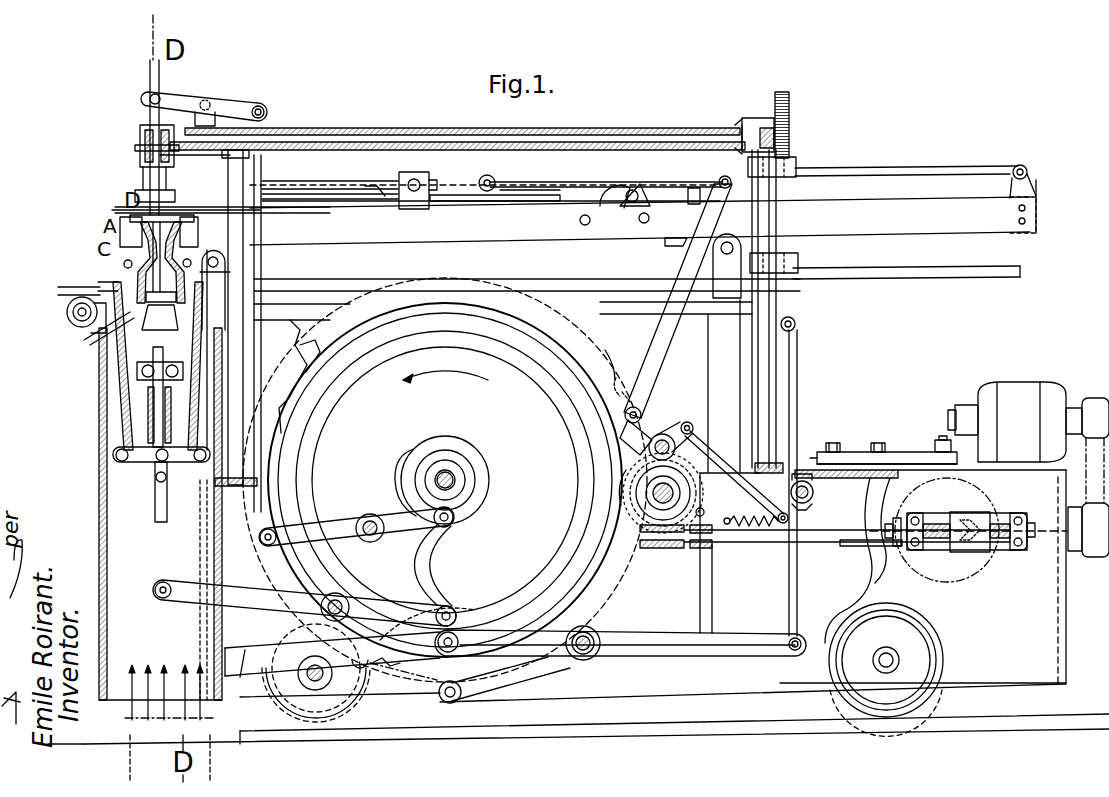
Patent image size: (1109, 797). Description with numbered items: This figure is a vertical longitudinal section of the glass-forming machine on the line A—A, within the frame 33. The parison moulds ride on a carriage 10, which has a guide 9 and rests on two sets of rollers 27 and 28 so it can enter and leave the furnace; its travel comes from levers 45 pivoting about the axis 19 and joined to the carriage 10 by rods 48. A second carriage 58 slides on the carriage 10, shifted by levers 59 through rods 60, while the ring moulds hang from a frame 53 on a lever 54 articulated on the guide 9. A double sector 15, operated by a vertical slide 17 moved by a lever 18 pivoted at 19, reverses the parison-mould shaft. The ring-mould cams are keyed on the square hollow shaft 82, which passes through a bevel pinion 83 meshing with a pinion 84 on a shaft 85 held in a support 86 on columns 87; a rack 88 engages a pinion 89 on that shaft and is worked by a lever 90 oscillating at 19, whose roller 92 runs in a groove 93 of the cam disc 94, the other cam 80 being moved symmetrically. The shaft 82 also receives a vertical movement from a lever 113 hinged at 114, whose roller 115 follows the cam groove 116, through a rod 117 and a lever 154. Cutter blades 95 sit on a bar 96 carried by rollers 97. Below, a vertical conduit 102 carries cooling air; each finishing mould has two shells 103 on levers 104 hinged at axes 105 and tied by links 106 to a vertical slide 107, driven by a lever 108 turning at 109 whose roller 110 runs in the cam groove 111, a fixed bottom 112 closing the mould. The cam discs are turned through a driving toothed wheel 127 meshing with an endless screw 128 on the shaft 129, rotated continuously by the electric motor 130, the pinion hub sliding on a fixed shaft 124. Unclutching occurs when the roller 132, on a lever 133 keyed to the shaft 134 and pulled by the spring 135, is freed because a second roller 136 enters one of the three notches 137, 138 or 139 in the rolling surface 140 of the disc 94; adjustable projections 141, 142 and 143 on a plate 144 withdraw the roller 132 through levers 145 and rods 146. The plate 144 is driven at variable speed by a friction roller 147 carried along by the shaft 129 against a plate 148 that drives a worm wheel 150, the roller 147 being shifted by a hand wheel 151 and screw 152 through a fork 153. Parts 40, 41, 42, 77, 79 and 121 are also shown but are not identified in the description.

The support 9 is at (413, 210).
The carriage 10 is at (643, 212).
The double sector 15 is at (612, 192).
The vertical slide 17 is at (683, 246).
The lever 18 is at (678, 657).
The pivot axis 19 is at (584, 661).
The rollers 27 is at (213, 250).
The rollers 28 is at (728, 234).
The frame 33 is at (923, 576).
The lever 40 is at (252, 652).
The pivot 41 is at (298, 672).
The pivot 42 is at (458, 698).
The levers 45 is at (708, 183).
The rods 48 is at (905, 172).
The frame 53 is at (112, 211).
The lever 54 is at (279, 206).
The second carriage 58 is at (496, 203).
The levers 59 is at (678, 320).
The rods 60 is at (648, 188).
The rod 77 is at (390, 206).
The pivot 79 is at (438, 183).
The cam 80 is at (140, 198).
The square hollow shaft 82 is at (149, 76).
The bevel pinion 83 is at (138, 147).
The pinion 84 is at (140, 135).
The shaft 85 is at (335, 140).
The support 86 is at (416, 128).
The columns 87 is at (232, 170).
The rack 88 is at (778, 112).
The pinion 89 is at (790, 132).
The lever 90 is at (526, 676).
The roller 92 is at (427, 641).
The groove 93 is at (441, 304).
The disc 94 is at (578, 345).
The blades 95 is at (62, 286).
The bar 96 is at (345, 285).
The supporting rollers 97 is at (66, 313).
The vertical conduit 102 is at (160, 475).
The shells 103 is at (120, 273).
The levers 104 is at (128, 403).
The axes 105 is at (137, 371).
The links 106 is at (175, 468).
The vertical slide 107 is at (152, 425).
The lever 108 is at (304, 603).
The pivot 109 is at (340, 595).
The roller 110 is at (436, 575).
The cam groove 111 is at (312, 447).
The bottom 112 is at (92, 330).
The lever 113 is at (335, 526).
The hinge 114 is at (382, 536).
The roller 115 is at (442, 528).
The cam groove 116 is at (404, 468).
The rod 117 is at (262, 263).
The shaft 121 is at (444, 472).
The shaft 124 is at (652, 548).
The driving toothed wheel 127 is at (628, 505).
The endless screw 128 is at (673, 550).
The shaft 129 is at (768, 537).
The electric motor 130 is at (1028, 469).
The roller 132 is at (604, 515).
The lever 133 is at (628, 447).
The shaft 134 is at (681, 424).
The spring 135 is at (748, 517).
The second roller 136 is at (608, 382).
The notch 137 is at (616, 374).
The notch 138 is at (300, 356).
The notch 139 is at (374, 665).
The rolling surface 140 is at (459, 276).
The projection 141 is at (946, 440).
The projection 142 is at (819, 445).
The projection 143 is at (868, 445).
The plate 144 is at (909, 455).
The levers 145 is at (805, 503).
The rods 146 is at (723, 462).
The friction roller 147 is at (980, 572).
The plate 148 is at (942, 590).
The worm wheel 150 is at (858, 547).
The hand wheel 151 is at (905, 541).
The screw 152 is at (940, 548).
The fork 153 is at (953, 514).
The lever 154 is at (218, 103).